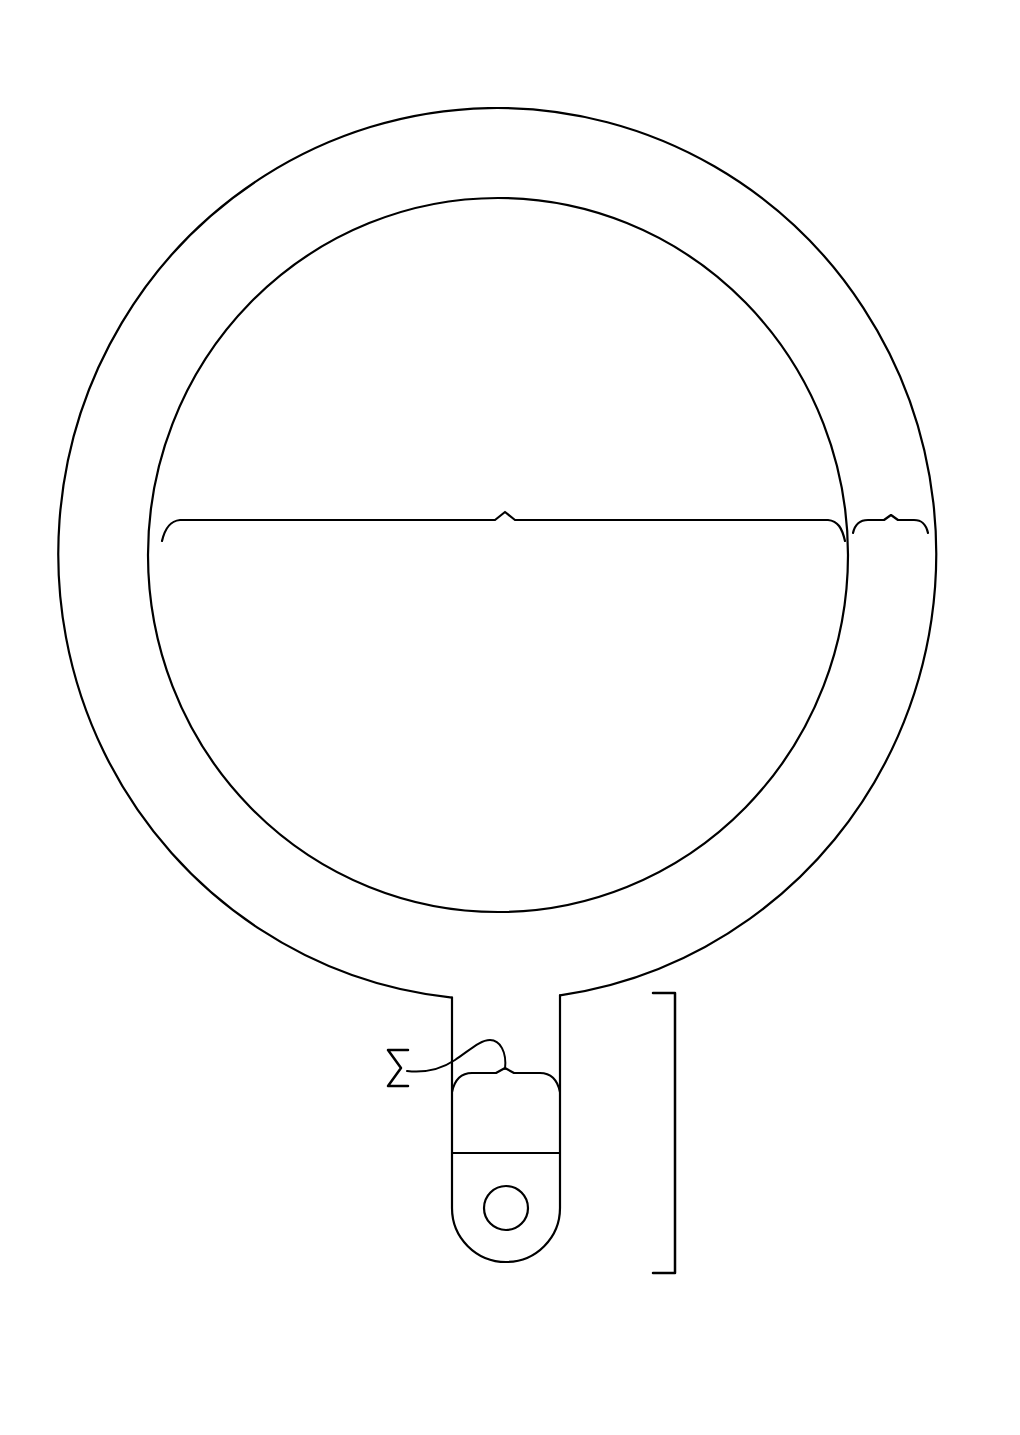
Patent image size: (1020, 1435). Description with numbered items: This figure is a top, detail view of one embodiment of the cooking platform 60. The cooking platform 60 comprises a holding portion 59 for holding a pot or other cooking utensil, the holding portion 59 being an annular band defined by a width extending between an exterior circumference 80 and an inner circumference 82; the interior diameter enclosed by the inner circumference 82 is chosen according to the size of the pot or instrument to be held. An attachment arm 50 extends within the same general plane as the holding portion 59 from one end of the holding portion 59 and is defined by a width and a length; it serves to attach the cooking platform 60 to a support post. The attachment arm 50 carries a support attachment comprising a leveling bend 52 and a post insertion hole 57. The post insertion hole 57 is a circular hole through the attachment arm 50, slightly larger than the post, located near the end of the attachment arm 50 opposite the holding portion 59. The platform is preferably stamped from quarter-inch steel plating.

The cooking platform 60 is at (522, 82).
The holding portion 59 is at (141, 767).
The exterior circumference 80 is at (702, 157).
The inner circumference 82 is at (757, 311).
The attachment arm 50 is at (553, 1121).
The leveling bend 52 is at (563, 1153).
The post insertion hole 57 is at (518, 1206).